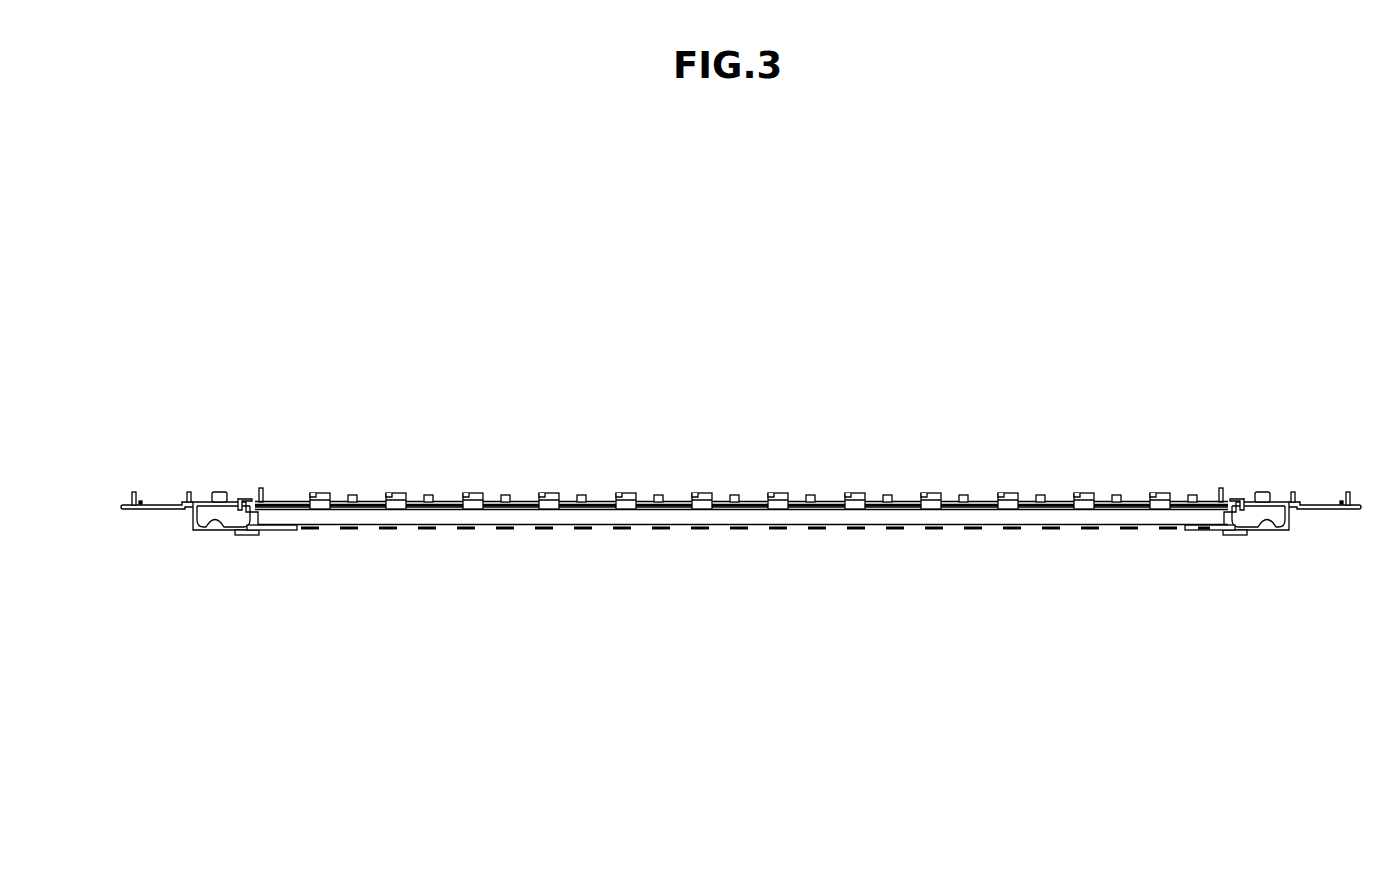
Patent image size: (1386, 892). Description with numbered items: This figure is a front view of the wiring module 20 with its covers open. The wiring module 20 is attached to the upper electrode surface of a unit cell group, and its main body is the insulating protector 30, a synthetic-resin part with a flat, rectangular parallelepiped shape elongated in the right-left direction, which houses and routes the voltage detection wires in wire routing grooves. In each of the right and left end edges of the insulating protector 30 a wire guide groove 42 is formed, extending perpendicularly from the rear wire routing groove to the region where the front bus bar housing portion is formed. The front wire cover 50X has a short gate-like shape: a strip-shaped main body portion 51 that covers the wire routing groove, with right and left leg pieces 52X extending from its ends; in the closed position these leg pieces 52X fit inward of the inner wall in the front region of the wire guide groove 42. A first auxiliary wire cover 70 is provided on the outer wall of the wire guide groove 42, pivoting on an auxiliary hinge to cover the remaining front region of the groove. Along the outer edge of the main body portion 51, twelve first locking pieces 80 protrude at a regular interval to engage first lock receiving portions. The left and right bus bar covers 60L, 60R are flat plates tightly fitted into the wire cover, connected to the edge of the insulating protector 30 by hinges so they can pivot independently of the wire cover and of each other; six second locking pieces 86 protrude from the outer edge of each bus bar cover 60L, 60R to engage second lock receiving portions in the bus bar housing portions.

The wiring module 20 is at (778, 408).
The insulating protector 30 is at (733, 521).
The wire guide groove 42 is at (201, 527).
The front wire cover 50X is at (982, 521).
The main body portion 51 is at (910, 521).
The leg pieces 52X is at (243, 502).
The left bus bar cover 60L is at (445, 503).
The right bus bar cover 60R is at (1057, 503).
The first auxiliary wire cover 70 is at (158, 511).
The first locking pieces 80 is at (478, 498).
The second locking pieces 86 is at (584, 494).